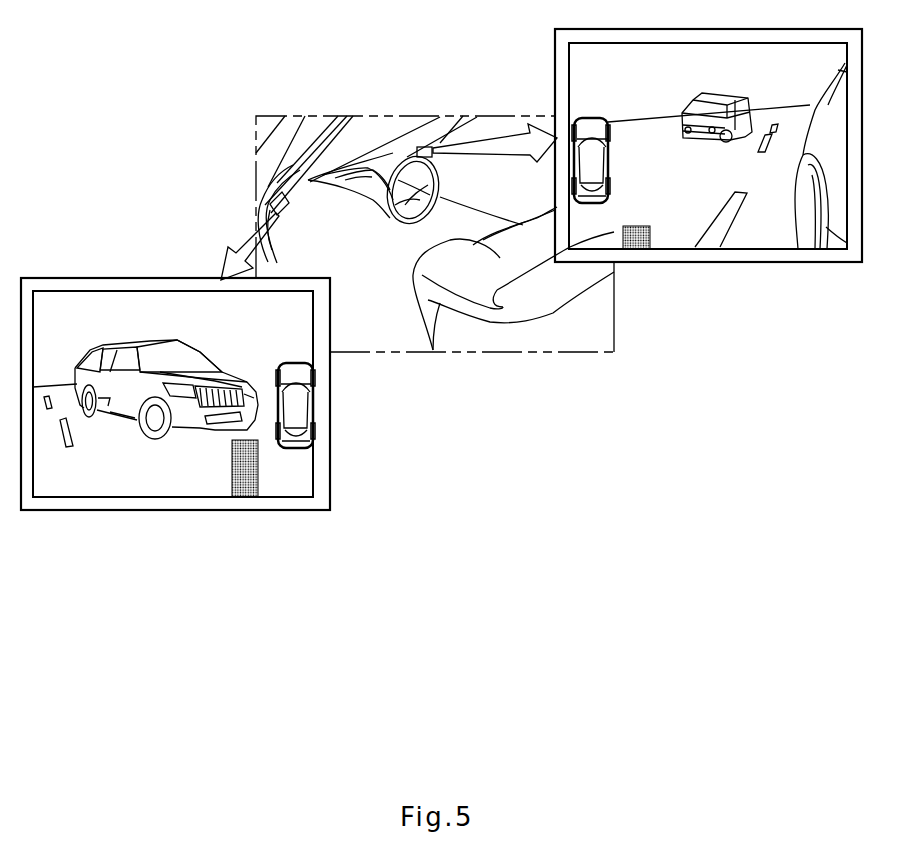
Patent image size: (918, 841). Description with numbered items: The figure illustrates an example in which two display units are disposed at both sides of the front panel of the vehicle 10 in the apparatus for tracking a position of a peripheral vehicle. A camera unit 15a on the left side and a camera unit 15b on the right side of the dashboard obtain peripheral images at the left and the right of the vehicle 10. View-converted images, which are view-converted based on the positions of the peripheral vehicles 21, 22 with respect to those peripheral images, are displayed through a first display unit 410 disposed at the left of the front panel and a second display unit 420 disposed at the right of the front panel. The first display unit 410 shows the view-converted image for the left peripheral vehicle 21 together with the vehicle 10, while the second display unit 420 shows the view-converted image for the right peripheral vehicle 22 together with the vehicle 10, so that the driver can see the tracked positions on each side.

The vehicle 10 is at (313, 405).
The first camera 15a is at (281, 192).
The second camera 15b is at (422, 147).
The peripheral vehicle 21 is at (262, 483).
The peripheral vehicle 22 is at (636, 251).
The first display screen 410 is at (67, 277).
The second display screen 420 is at (838, 265).